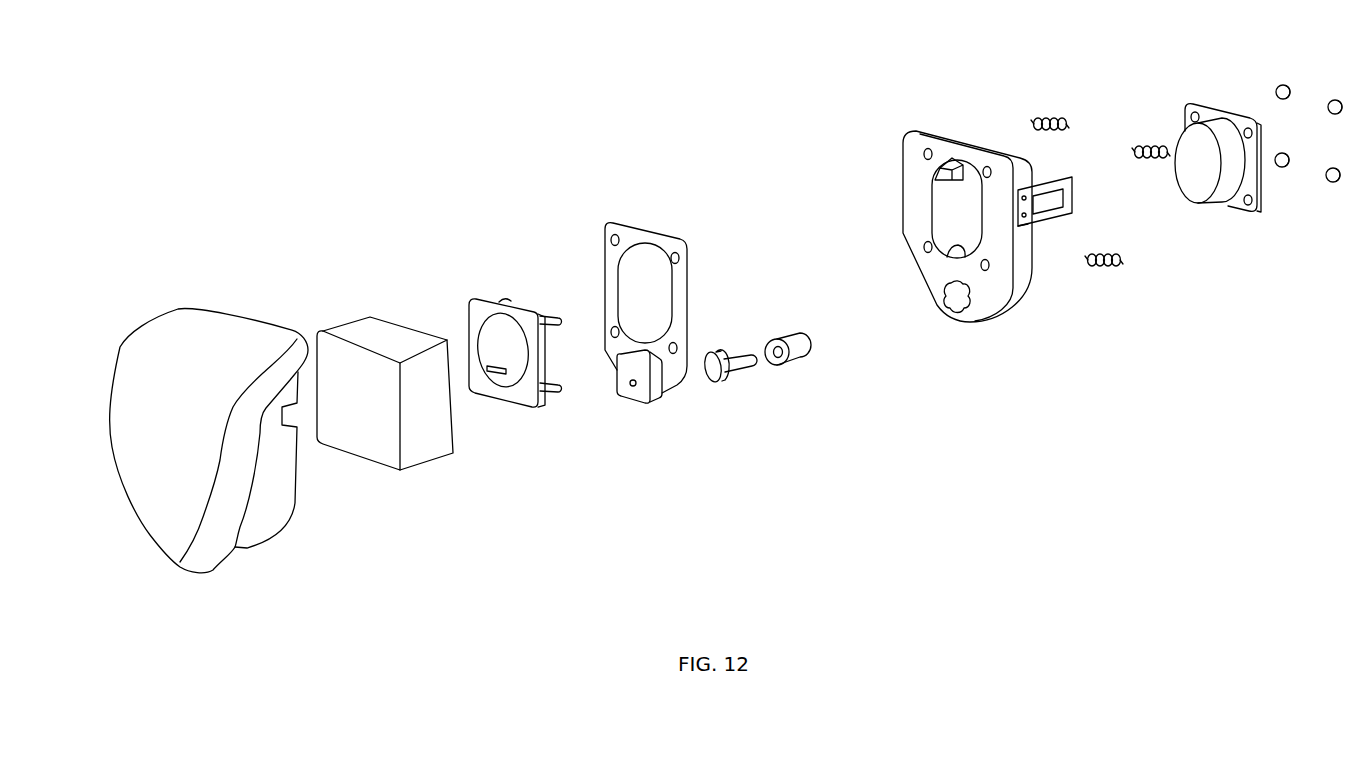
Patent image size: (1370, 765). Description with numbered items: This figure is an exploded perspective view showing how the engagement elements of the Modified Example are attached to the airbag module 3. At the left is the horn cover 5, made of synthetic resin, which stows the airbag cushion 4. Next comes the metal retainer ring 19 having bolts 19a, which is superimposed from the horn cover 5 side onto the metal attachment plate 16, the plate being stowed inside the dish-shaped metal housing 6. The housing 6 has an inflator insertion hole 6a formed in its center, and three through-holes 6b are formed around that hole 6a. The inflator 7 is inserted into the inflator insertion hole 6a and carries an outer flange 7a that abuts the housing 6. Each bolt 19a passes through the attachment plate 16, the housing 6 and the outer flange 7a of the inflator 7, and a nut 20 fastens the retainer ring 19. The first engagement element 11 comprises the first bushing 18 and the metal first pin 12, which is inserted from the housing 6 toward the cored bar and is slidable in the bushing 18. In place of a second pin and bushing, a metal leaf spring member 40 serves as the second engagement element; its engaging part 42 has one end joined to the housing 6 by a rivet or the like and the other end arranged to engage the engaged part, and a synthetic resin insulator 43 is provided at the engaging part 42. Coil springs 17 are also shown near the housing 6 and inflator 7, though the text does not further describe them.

The airbag module 3 is at (360, 532).
The airbag cushion 4 is at (355, 327).
The horn cover 5 is at (170, 323).
The housing 6 is at (990, 347).
The inflator insertion hole 6a is at (947, 248).
The through-holes 6b is at (960, 305).
The inflator 7 is at (1227, 212).
The outer flange 7a is at (1232, 110).
The first engagement element 11 is at (765, 376).
The first pin 12 is at (740, 340).
The attachment plate 16 is at (658, 240).
The spring 17 is at (1067, 118).
The first bushing 18 is at (792, 322).
The retainer ring 19 is at (488, 295).
The bolt 19a is at (547, 313).
The nut 20 is at (1281, 85).
The leaf spring member 40 is at (1050, 176).
The engaging part 42 is at (1040, 224).
The insulator 43 is at (1068, 193).